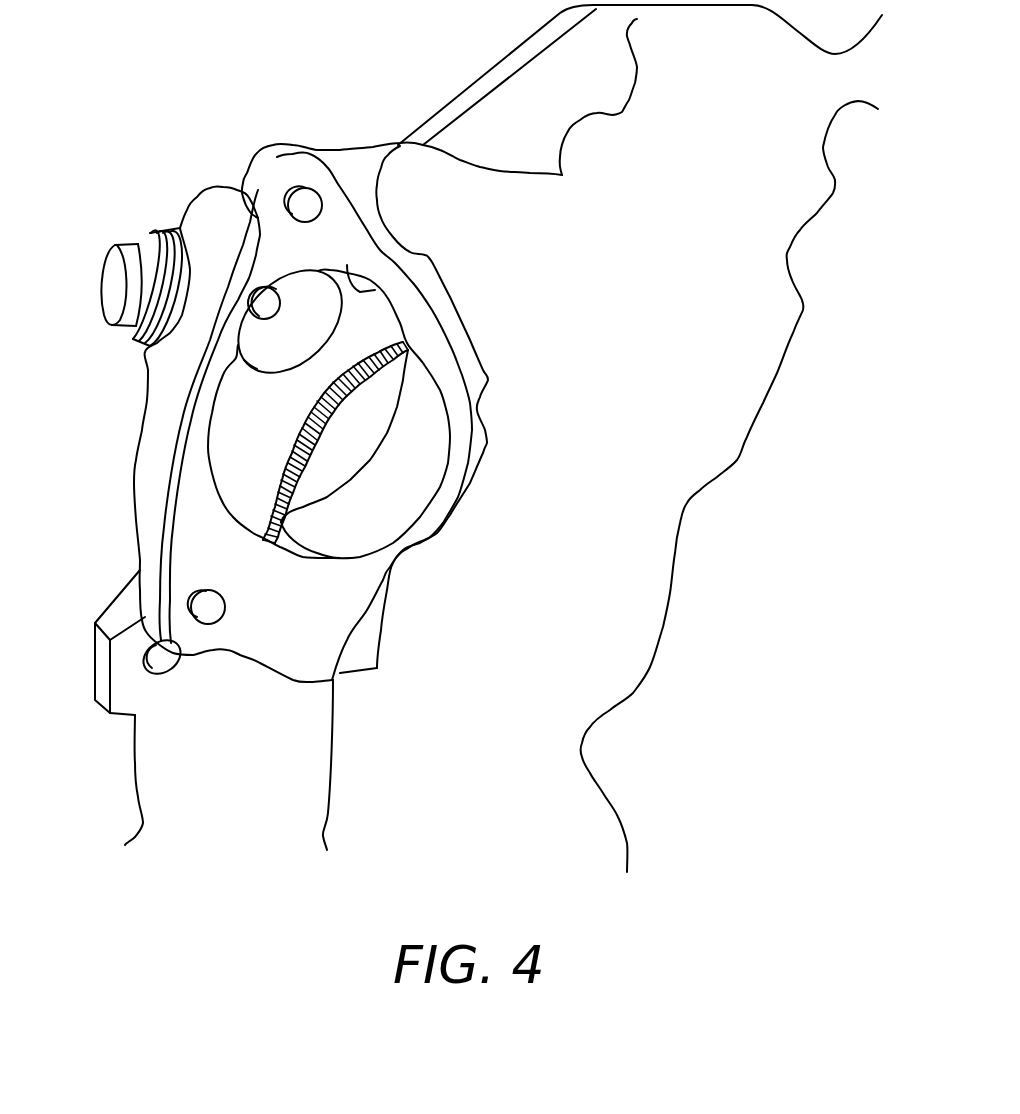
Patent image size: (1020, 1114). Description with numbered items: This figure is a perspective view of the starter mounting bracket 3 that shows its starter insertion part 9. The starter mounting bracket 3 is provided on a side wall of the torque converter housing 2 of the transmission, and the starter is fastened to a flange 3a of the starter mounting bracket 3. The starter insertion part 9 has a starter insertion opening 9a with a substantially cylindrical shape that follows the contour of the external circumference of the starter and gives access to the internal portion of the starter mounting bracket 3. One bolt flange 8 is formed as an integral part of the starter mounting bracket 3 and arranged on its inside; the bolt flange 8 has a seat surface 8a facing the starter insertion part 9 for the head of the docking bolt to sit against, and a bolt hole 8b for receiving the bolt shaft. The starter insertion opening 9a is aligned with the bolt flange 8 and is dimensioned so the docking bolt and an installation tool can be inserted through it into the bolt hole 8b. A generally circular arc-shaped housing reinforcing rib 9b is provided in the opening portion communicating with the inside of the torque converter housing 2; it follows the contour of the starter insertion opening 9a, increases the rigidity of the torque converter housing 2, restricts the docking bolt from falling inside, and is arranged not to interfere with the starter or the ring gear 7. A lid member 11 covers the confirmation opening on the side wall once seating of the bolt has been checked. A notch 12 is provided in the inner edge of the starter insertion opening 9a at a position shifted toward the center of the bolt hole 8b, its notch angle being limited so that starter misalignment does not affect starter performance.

The torque converter housing 2 is at (476, 78).
The starter mounting bracket 3 is at (203, 181).
The flange 3a is at (183, 540).
The ring gear 7 is at (313, 475).
The bolt flange 8 is at (268, 368).
The seat surface 8a is at (260, 366).
The bolt hole 8b is at (249, 304).
The starter insertion part 9 is at (252, 542).
The starter insertion opening 9a is at (293, 550).
The housing reinforcing rib 9b is at (425, 460).
The lid member 11 is at (116, 277).
The notch 12 is at (347, 265).